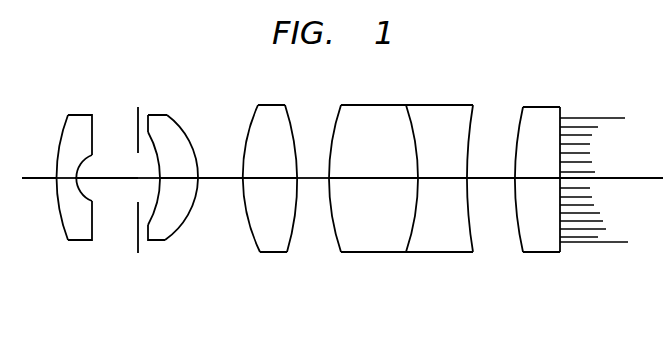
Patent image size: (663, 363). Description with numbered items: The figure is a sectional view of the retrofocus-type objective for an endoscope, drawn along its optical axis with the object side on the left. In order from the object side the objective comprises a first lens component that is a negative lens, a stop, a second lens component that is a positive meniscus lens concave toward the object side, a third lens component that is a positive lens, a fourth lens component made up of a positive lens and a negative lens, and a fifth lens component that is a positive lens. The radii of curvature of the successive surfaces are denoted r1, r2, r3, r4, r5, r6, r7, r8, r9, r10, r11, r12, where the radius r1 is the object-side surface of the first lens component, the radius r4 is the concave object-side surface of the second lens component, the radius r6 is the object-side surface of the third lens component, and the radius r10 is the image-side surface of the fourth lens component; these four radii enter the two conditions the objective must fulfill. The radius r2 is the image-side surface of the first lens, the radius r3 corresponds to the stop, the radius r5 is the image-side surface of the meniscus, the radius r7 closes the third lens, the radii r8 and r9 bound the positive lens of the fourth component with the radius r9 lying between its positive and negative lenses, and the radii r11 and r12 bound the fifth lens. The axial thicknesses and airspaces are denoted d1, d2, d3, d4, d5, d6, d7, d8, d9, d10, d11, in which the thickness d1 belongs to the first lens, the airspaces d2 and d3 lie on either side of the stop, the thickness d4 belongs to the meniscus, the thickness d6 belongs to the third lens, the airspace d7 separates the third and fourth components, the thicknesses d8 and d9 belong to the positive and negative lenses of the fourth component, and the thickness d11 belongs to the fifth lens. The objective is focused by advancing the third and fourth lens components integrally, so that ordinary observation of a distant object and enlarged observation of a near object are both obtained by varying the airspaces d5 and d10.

The radius of curvature of the object-side surface of the first lens component r1 is at (61, 205).
The radius of curvature of lens surface r2 is at (90, 203).
The radius of curvature of lens surface r3 is at (136, 232).
The radius of curvature of the object-side surface of the second lens component r4 is at (151, 220).
The radius of curvature of lens surface r5 is at (176, 230).
The radius of curvature of the object-side surface of the third lens component r6 is at (248, 222).
The radius of curvature of lens surface r7 is at (294, 230).
The radius of curvature of lens surface r8 is at (334, 230).
The radius of curvature of lens surface r9 is at (418, 232).
The radius of curvature of the image-side surface of the fourth lens component r10 is at (466, 230).
The radius of curvature of lens surface r11 is at (518, 230).
The radius of curvature of lens surface r12 is at (559, 232).
The lens thickness d1 is at (69, 178).
The airspace d2 is at (106, 178).
The airspace d3 is at (148, 180).
The lens thickness d4 is at (178, 178).
The airspace d5 is at (220, 178).
The lens thickness d6 is at (267, 178).
The airspace d7 is at (313, 178).
The lens thickness d8 is at (367, 178).
The lens thickness d9 is at (438, 178).
The airspace d10 is at (485, 178).
The lens thickness d11 is at (528, 178).